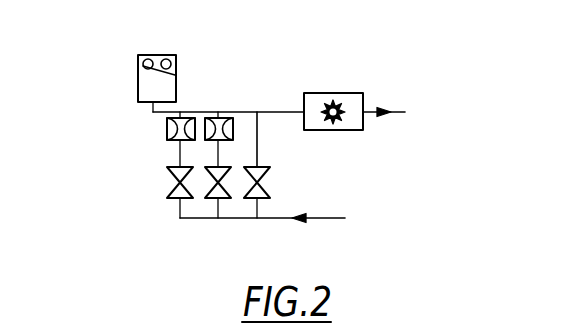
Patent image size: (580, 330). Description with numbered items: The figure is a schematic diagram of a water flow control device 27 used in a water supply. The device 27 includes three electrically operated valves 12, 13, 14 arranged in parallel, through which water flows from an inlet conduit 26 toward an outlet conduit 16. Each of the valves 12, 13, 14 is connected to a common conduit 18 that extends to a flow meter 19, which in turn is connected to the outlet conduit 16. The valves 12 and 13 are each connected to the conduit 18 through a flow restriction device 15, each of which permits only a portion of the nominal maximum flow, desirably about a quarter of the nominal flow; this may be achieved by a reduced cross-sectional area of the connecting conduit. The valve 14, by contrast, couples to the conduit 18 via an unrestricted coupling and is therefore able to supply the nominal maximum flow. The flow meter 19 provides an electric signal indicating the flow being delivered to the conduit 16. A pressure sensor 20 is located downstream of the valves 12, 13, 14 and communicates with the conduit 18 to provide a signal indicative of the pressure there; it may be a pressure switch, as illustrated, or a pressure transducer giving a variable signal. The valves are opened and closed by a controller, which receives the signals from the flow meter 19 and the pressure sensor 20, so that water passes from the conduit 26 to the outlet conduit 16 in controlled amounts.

The valve 12 is at (167, 172).
The valve 13 is at (212, 198).
The valve 14 is at (272, 173).
The flow restriction device 15 is at (165, 125).
The outlet conduit 16 is at (372, 107).
The conduit 18 is at (242, 112).
The flow meter 19 is at (333, 93).
The pressure sensor 20 is at (137, 77).
The conduit 26 is at (322, 218).
The device 27 is at (455, 95).